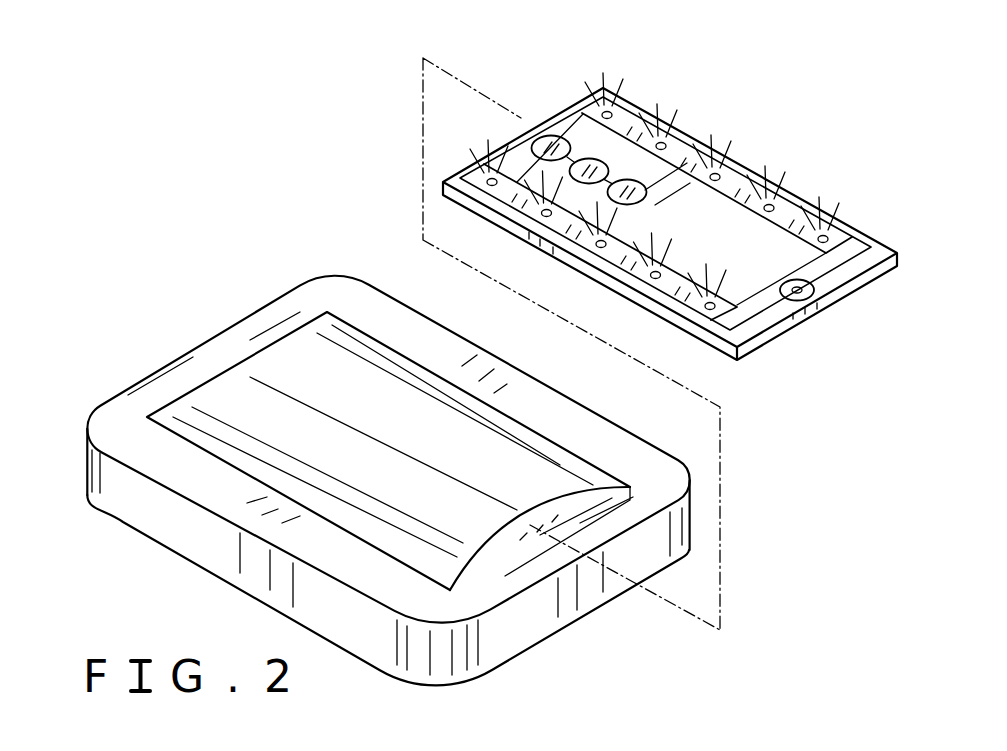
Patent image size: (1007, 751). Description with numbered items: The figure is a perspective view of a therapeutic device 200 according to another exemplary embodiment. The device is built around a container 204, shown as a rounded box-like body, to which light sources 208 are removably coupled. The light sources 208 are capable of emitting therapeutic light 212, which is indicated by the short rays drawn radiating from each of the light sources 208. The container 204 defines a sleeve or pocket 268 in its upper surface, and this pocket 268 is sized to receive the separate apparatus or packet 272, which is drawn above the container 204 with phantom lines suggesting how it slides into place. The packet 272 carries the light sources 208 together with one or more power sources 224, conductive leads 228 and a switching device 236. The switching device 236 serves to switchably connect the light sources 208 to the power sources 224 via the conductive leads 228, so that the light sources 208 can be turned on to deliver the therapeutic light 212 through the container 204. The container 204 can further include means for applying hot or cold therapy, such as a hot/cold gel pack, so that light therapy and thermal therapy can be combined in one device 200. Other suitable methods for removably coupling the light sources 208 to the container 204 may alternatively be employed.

The therapeutic device 200 is at (204, 131).
The container 204 is at (195, 345).
The light sources 208 is at (610, 111).
The therapeutic light 212 is at (733, 150).
The power sources 224 is at (553, 136).
The conductive leads 228 is at (868, 250).
The switching device 236 is at (813, 293).
The sleeve or pocket 268 is at (222, 465).
The packet 272 is at (552, 110).